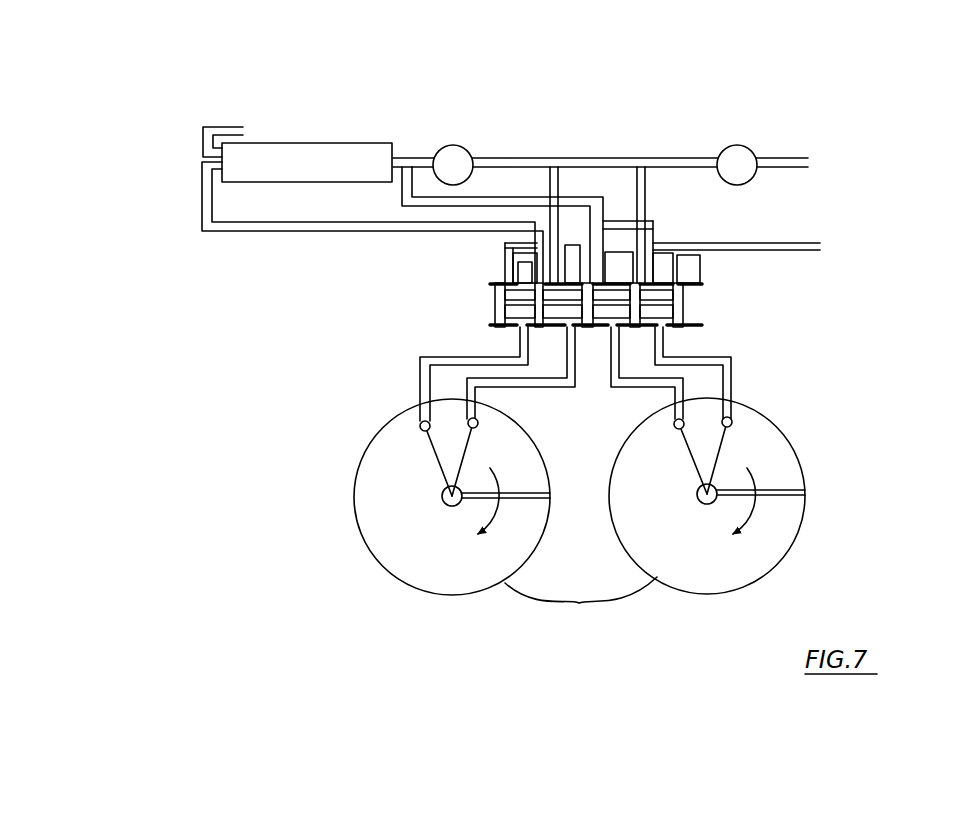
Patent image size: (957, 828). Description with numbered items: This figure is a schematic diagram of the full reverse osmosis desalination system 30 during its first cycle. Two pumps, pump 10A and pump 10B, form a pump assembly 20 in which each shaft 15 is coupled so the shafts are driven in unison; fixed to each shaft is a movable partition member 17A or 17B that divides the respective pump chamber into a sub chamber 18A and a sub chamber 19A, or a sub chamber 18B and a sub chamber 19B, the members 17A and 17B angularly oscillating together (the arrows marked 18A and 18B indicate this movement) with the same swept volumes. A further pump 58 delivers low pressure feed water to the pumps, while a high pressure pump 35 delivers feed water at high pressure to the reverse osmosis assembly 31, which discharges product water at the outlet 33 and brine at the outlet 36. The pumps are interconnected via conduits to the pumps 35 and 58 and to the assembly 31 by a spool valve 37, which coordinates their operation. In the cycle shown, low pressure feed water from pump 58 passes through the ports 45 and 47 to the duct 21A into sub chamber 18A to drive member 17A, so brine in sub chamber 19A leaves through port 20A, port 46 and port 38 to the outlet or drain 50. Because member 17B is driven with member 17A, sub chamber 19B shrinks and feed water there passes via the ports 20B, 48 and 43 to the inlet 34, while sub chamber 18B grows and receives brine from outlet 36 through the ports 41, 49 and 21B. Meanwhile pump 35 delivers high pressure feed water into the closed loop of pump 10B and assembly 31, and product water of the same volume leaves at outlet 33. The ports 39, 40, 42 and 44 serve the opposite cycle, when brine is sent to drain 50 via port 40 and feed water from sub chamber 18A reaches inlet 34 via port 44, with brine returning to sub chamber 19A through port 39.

The pump 10A is at (336, 502).
The pump 10B is at (866, 496).
The shaft 15 is at (447, 504).
The movable partition member 17A is at (517, 494).
The movable partition member 17B is at (782, 496).
The sub chamber 18A is at (516, 458).
The sub chamber 18B is at (771, 455).
The sub chamber 19A is at (403, 505).
The sub chamber 19B is at (663, 493).
The pump assembly 20 is at (579, 603).
The port 20A is at (420, 422).
The port 20B is at (675, 419).
The duct 21A is at (477, 418).
The port 21B is at (731, 417).
The desalination system 30 is at (818, 194).
The assembly 31 is at (325, 148).
The outlet 33 is at (218, 132).
The inlet 34 is at (399, 158).
The pump 35 is at (455, 146).
The outlet 36 is at (204, 165).
The spool valve 37 is at (432, 302).
The port 38 is at (500, 284).
The port 39 is at (512, 276).
The port 40 is at (665, 290).
The port 41 is at (656, 280).
The port 42 is at (648, 282).
The port 43 is at (638, 266).
The port 44 is at (575, 248).
The port 45 is at (552, 238).
The port 46 is at (518, 337).
The port 47 is at (565, 332).
The port 48 is at (622, 332).
The port 49 is at (672, 336).
The outlet (drain) 50 is at (790, 252).
The further pump 58 is at (737, 145).